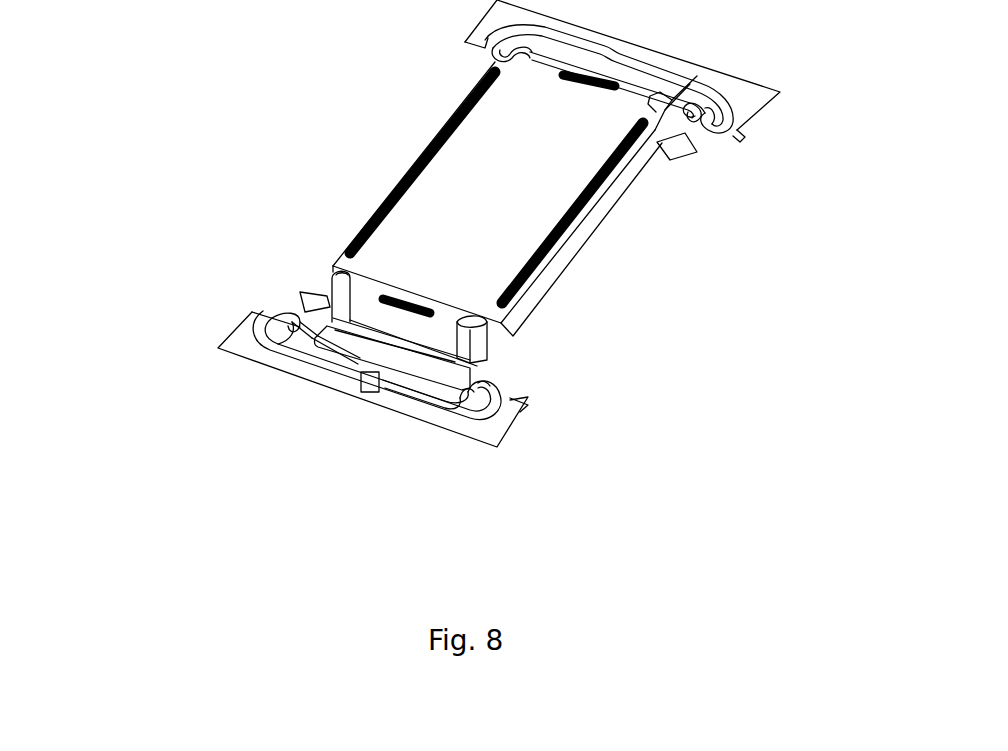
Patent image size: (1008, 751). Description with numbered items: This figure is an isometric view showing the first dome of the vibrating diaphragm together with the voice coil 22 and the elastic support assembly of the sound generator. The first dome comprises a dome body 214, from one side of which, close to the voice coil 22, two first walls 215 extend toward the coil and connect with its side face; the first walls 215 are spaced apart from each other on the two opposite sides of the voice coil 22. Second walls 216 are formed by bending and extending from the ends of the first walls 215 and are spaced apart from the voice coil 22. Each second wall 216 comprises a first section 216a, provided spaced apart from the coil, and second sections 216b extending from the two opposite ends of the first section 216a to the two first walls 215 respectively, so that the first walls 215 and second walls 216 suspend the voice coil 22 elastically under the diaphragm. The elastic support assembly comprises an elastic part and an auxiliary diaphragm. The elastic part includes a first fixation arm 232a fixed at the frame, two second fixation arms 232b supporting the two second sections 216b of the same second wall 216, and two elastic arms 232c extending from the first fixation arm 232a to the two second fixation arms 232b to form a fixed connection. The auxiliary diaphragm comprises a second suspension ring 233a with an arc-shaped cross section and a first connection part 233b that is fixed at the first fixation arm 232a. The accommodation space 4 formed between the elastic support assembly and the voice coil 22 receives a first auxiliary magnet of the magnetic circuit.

The accommodation space 4 is at (432, 367).
The voice coil 22 is at (580, 240).
The dome body 214 is at (458, 178).
The first walls 215 is at (477, 343).
The second walls 216 is at (380, 497).
The first section 216a is at (378, 372).
The second sections 216b is at (330, 322).
The first fixation arm 232a is at (487, 427).
The second fixation arms 232b is at (463, 360).
The elastic arms 232c is at (455, 382).
The second suspension ring 233a is at (723, 133).
The first connection part 233b is at (255, 315).